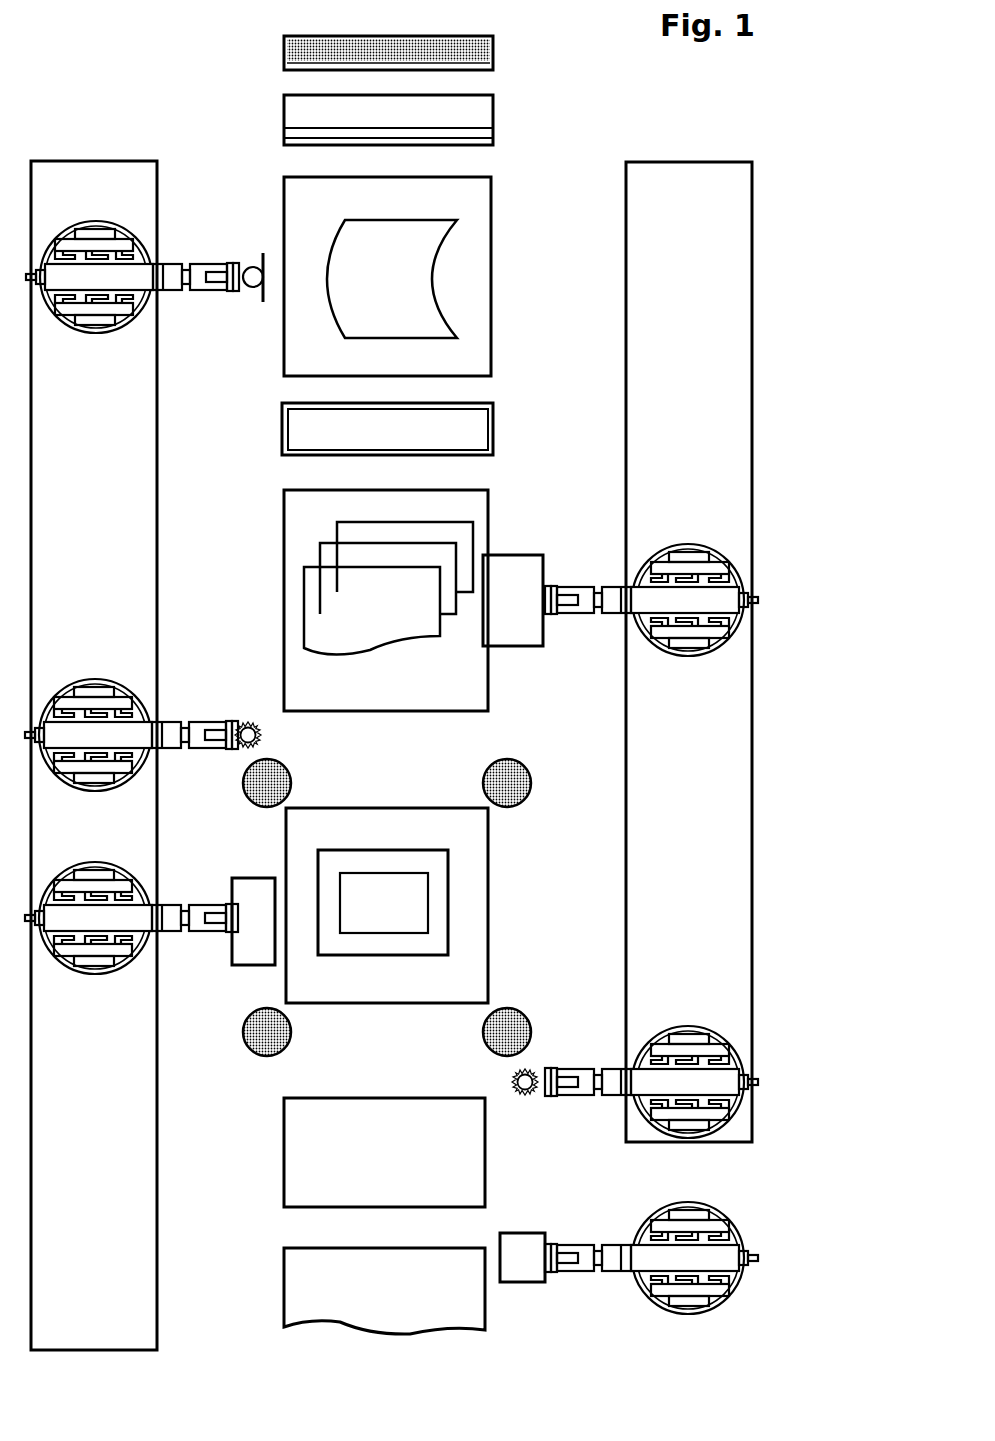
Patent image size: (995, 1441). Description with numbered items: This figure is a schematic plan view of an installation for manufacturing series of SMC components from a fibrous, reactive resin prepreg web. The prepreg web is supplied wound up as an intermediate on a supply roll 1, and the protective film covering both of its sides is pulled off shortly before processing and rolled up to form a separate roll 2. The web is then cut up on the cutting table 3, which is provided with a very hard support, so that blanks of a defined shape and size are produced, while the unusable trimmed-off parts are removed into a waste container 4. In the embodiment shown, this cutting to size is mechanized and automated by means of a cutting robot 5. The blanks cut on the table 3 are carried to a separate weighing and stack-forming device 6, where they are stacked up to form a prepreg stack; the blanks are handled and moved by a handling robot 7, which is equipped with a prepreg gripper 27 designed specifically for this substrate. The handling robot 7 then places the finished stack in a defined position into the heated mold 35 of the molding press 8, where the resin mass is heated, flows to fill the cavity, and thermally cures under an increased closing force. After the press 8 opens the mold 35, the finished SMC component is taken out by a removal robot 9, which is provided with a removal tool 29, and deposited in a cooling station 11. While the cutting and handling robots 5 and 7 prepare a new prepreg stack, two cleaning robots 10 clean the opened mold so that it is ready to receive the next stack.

The supply roll 1 is at (480, 107).
The roll 2 is at (492, 53).
The cutting table 3 is at (473, 258).
The waste container 4 is at (473, 430).
The cutting robot 5 is at (127, 227).
The weighing and stack-forming device 6 is at (295, 520).
The handling robot 7 is at (680, 560).
The molding press 8 is at (536, 765).
The removal robot 9 is at (92, 958).
The cleaning robots 10 is at (126, 696).
The cooling station 11 is at (452, 1179).
The prepreg gripper 27 is at (514, 566).
The removal tool 29 is at (243, 887).
The heated mold 35 is at (395, 888).